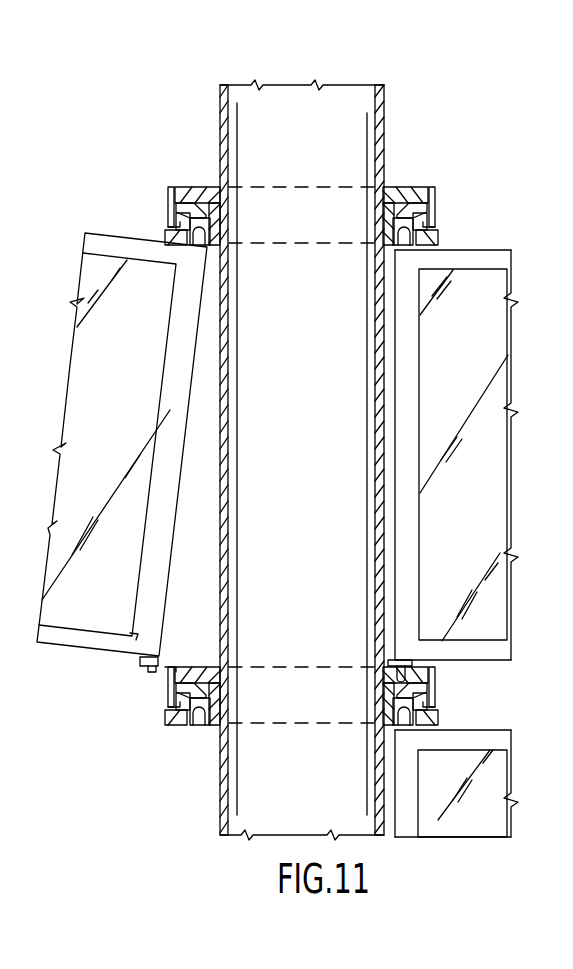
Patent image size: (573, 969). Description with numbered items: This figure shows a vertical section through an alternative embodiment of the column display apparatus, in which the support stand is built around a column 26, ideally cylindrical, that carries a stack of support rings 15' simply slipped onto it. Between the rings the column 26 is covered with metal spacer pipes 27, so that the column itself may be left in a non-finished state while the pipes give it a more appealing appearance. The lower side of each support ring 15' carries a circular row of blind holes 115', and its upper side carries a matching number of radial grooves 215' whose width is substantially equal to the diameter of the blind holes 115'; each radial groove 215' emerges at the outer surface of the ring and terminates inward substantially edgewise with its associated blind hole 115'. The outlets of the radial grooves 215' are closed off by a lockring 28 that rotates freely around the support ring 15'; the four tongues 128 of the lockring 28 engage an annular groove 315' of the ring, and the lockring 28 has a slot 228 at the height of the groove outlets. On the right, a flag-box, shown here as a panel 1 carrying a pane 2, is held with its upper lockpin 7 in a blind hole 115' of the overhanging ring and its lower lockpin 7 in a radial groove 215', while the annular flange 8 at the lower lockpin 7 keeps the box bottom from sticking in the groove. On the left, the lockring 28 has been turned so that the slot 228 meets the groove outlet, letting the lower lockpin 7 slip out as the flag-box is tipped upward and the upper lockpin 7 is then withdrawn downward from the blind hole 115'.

The wall panel 1 is at (76, 360).
The glass pane 2 is at (157, 512).
The lockpin 7 is at (210, 232).
The annular flange 8 is at (135, 636).
The support ring 15' is at (313, 433).
The column 26 is at (357, 133).
The metal spacer pipe 27 is at (222, 112).
The lockring 28 is at (433, 203).
The blind hole 115' is at (321, 477).
The tongue 128 is at (172, 708).
The radial groove 215' is at (323, 419).
The slot 228 is at (170, 677).
The annular groove 315' is at (361, 496).